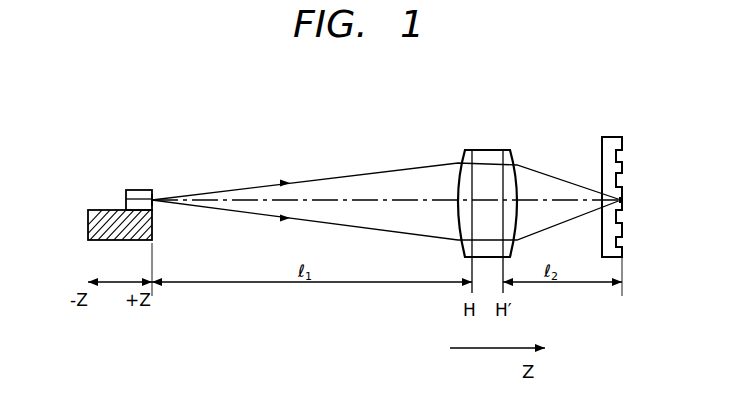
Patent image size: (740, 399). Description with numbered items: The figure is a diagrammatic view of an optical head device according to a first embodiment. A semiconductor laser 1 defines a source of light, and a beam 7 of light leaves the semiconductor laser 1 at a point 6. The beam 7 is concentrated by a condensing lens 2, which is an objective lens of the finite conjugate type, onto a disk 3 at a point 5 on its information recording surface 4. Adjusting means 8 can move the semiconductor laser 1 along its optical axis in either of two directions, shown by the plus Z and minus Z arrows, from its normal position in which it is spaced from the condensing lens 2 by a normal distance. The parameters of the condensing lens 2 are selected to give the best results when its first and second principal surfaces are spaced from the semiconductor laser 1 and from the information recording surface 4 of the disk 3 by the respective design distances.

The semiconductor laser 1 is at (138, 189).
The condensing lens 2 is at (478, 172).
The disk 3 is at (608, 137).
The information recording surface 4 is at (622, 190).
The point 5 is at (622, 202).
The point 6 is at (154, 196).
The beam 7 is at (261, 186).
The adjusting means 8 is at (152, 228).